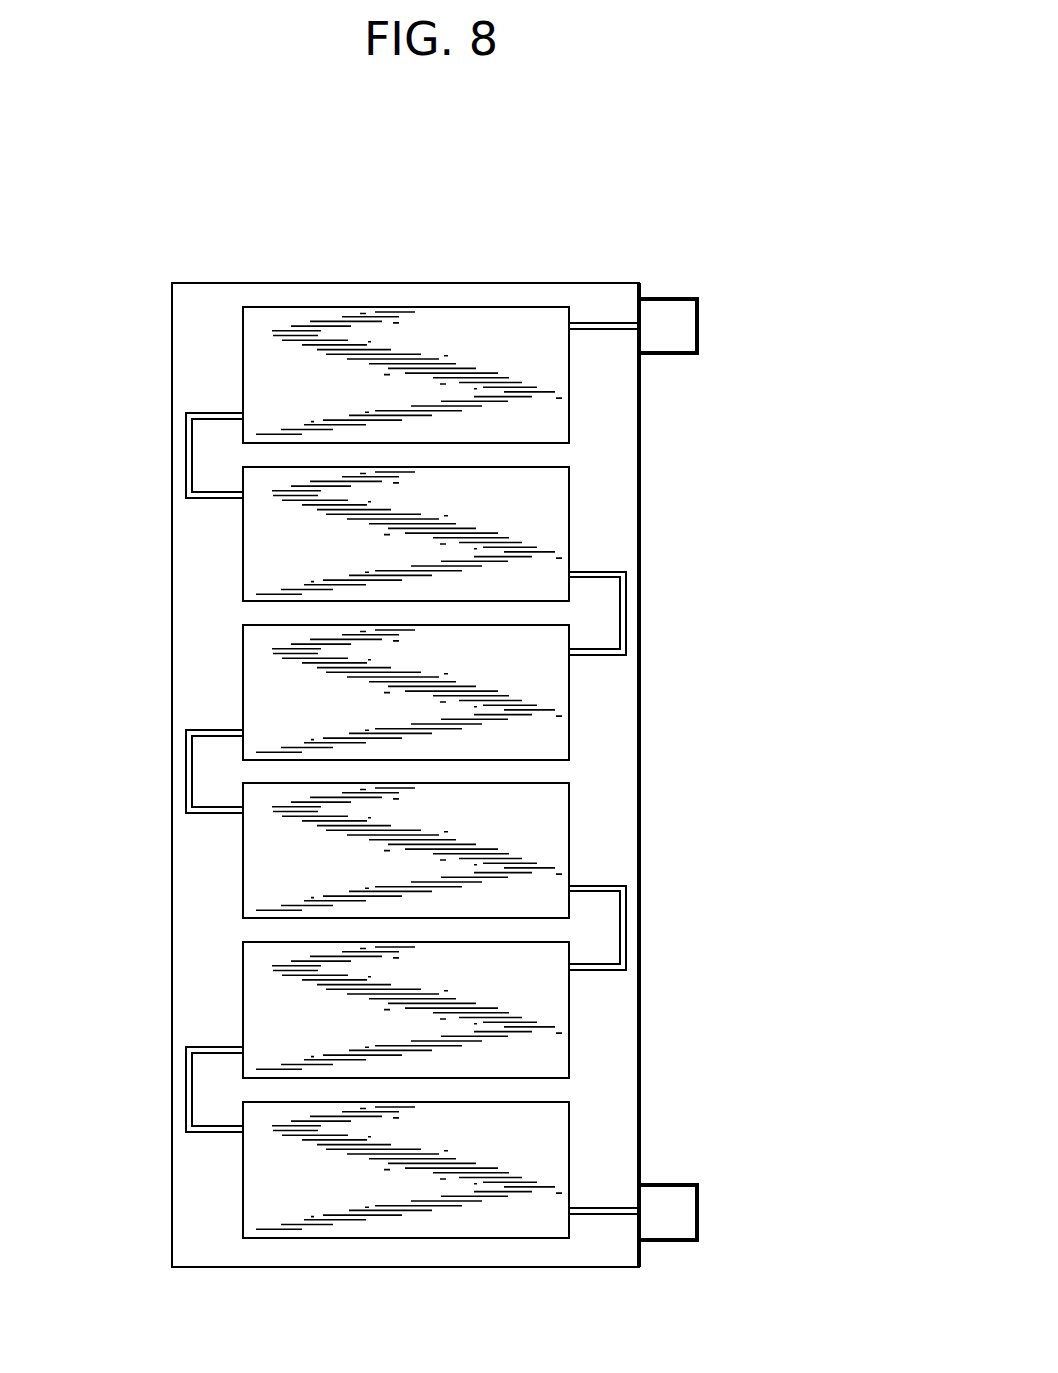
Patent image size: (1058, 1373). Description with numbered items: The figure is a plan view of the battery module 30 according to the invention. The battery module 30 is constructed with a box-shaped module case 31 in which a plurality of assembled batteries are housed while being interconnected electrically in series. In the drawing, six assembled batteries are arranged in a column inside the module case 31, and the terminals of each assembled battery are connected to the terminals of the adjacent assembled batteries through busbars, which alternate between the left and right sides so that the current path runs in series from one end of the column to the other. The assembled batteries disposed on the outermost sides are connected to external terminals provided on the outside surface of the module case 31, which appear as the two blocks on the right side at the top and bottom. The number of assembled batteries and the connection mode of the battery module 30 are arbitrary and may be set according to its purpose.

The battery module 30 is at (651, 197).
The module case 31 is at (173, 330).